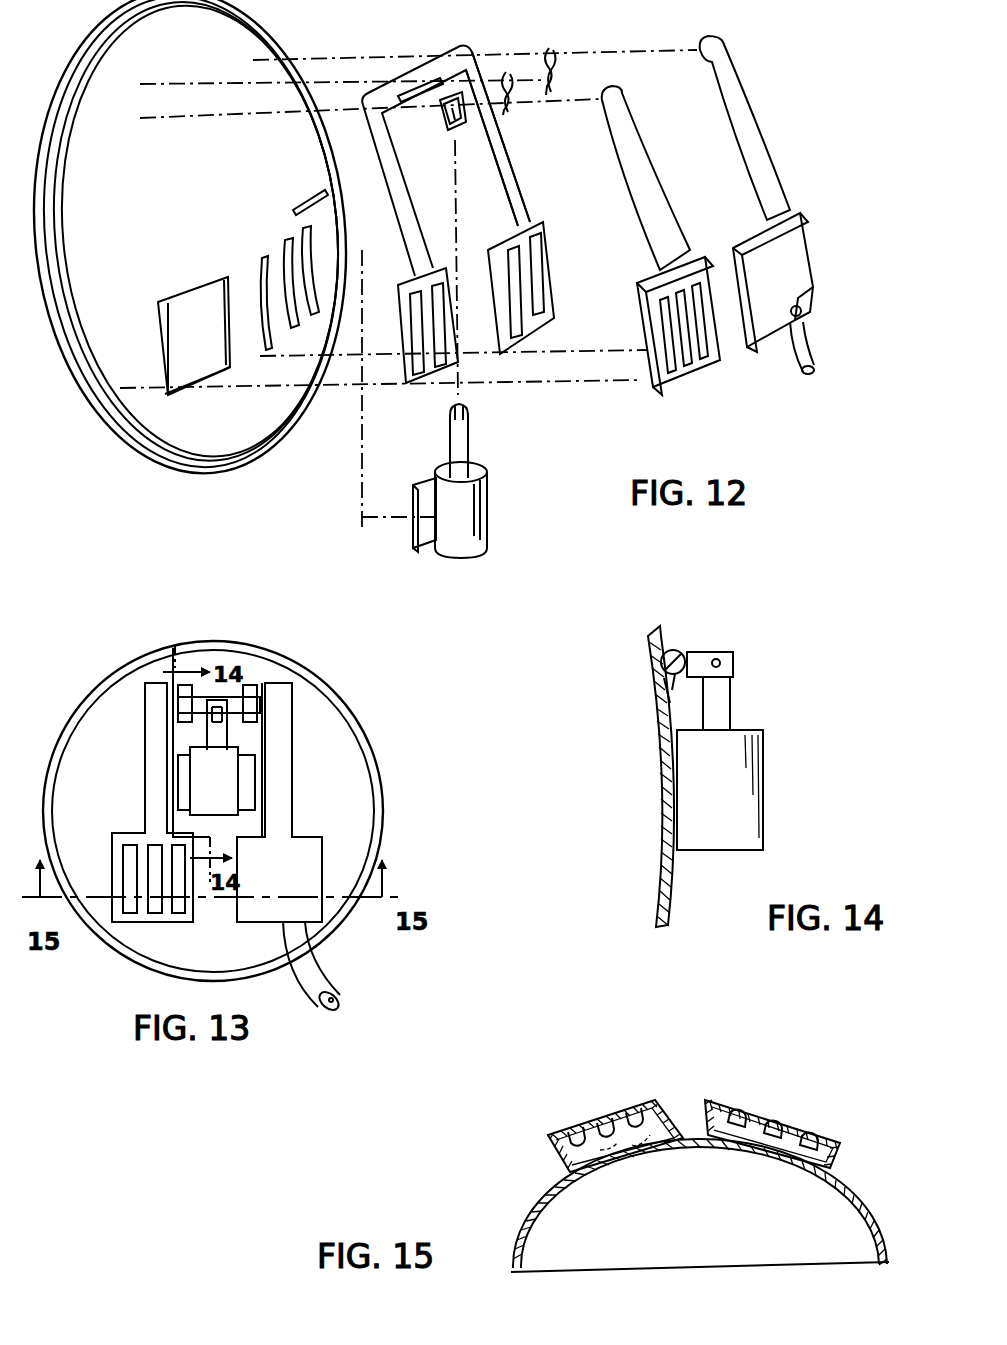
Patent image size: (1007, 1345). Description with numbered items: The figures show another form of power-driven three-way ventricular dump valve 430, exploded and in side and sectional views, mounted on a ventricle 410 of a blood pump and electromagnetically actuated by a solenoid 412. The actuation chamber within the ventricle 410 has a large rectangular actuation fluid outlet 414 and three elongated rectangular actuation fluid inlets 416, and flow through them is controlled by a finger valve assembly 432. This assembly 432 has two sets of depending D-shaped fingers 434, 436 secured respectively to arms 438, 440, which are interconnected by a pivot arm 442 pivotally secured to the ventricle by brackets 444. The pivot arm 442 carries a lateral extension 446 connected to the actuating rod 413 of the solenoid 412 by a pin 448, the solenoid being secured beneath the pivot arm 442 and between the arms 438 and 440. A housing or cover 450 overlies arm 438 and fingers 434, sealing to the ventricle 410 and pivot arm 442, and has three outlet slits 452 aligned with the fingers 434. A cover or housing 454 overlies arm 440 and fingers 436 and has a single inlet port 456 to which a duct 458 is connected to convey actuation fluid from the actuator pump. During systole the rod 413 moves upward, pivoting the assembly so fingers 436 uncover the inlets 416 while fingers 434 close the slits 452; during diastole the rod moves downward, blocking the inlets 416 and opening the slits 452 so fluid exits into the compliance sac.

In FIG. 12, the ventricle 410 is at (138, 452).
In FIG. 13, the ventricle 410 is at (365, 736).
In FIG. 14, the ventricle 410 is at (660, 871).
In FIG. 15, the ventricle 410 is at (520, 1244).
In FIG. 12, the solenoid 412 is at (471, 548).
In FIG. 13, the solenoid 412 is at (216, 781).
In FIG. 14, the solenoid 412 is at (752, 821).
In FIG. 12, the actuating rod 413 is at (468, 434).
In FIG. 13, the actuating rod 413 is at (213, 737).
In FIG. 14, the actuating rod 413 is at (722, 707).
In FIG. 12, the actuation fluid outlet 414 is at (168, 325).
In FIG. 15, the actuation fluid outlet 414 is at (593, 1172).
In FIG. 12, the actuation fluid inlets 416 is at (305, 230).
In FIG. 15, the actuation fluid inlets 416 is at (780, 1166).
In FIG. 12, the valve 430 is at (755, 30).
In FIG. 12, the finger valve assembly 432 is at (466, 150).
In FIG. 13, the finger valve assembly 432 is at (217, 742).
In FIG. 12, the fingers 434 is at (459, 365).
In FIG. 15, the fingers 434 is at (620, 1110).
In FIG. 12, the fingers 436 is at (550, 288).
In FIG. 15, the fingers 436 is at (790, 1118).
In FIG. 12, the arm 438 is at (404, 222).
In FIG. 12, the arm 440 is at (520, 178).
In FIG. 12, the pivot arm 442 is at (402, 92).
In FIG. 13, the pivot arm 442 is at (262, 704).
In FIG. 14, the pivot arm 442 is at (661, 667).
In FIG. 12, the brackets 444 is at (556, 66).
In FIG. 13, the brackets 444 is at (250, 685).
In FIG. 14, the brackets 444 is at (657, 640).
In FIG. 12, the lateral extension 446 is at (456, 130).
In FIG. 14, the lateral extension 446 is at (692, 652).
In FIG. 12, the pin 448 is at (303, 205).
In FIG. 14, the pin 448 is at (733, 666).
In FIG. 12, the housing or cover 450 is at (648, 158).
In FIG. 13, the housing or cover 450 is at (153, 758).
In FIG. 15, the housing or cover 450 is at (550, 1160).
In FIG. 12, the outlet slits 452 is at (706, 366).
In FIG. 13, the outlet slits 452 is at (178, 915).
In FIG. 15, the outlet slits 452 is at (648, 1105).
In FIG. 12, the cover or housing 454 is at (755, 145).
In FIG. 13, the cover or housing 454 is at (280, 767).
In FIG. 15, the cover or housing 454 is at (838, 1157).
In FIG. 12, the inlet port 456 is at (802, 312).
In FIG. 12, the duct 458 is at (815, 362).
In FIG. 13, the duct 458 is at (325, 972).